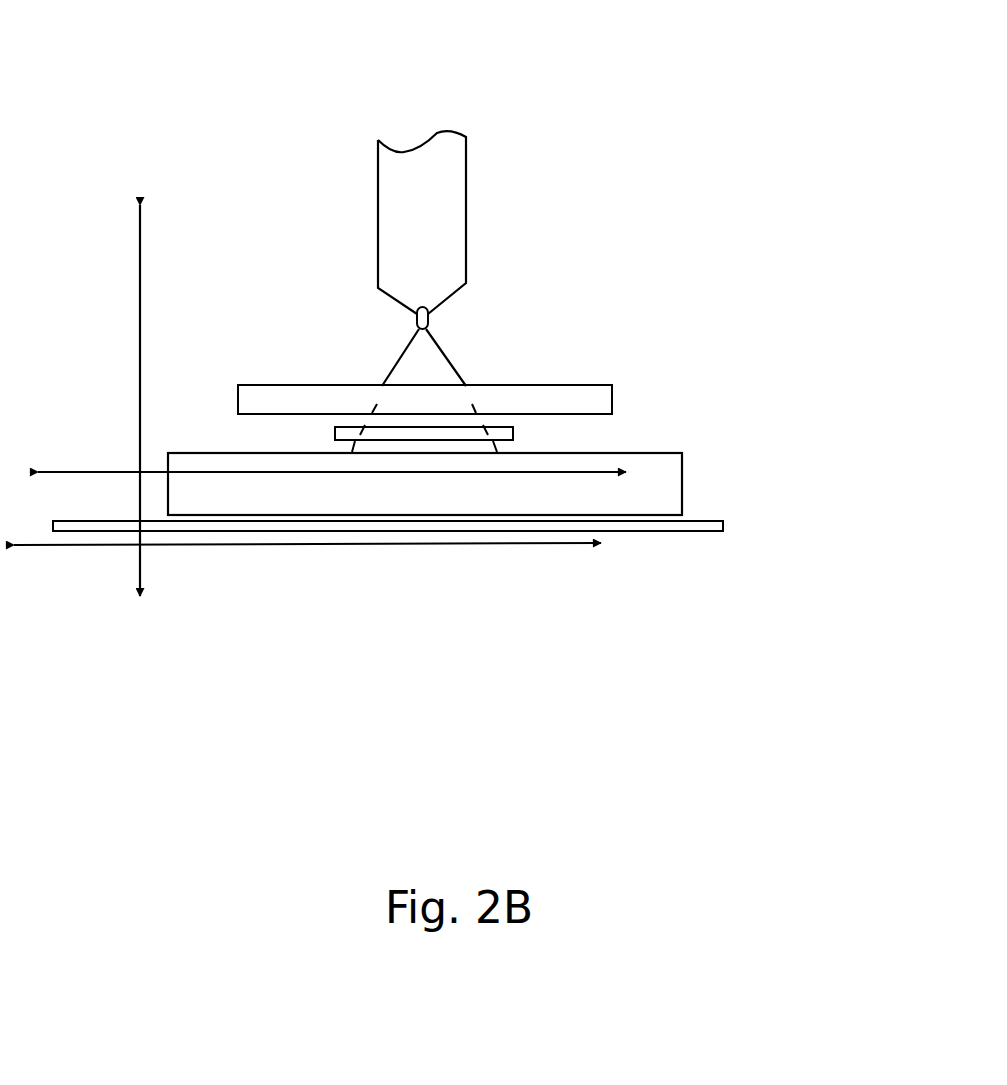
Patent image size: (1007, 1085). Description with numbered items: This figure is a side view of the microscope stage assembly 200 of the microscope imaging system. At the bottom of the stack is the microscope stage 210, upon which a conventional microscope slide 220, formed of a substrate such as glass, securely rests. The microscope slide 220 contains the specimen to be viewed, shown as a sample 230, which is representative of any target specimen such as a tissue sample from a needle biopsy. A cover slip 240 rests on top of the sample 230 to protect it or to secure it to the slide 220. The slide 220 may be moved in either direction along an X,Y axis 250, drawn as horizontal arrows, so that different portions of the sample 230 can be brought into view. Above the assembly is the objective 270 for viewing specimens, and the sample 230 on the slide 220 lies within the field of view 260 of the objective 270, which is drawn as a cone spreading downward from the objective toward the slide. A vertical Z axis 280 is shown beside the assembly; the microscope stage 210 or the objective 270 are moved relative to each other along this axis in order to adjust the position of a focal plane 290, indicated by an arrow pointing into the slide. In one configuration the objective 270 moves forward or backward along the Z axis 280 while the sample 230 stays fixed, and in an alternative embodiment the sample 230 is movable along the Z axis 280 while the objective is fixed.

The microscope stage assembly 200 is at (280, 75).
The microscope stage 210 is at (723, 525).
The microscope slide 220 is at (682, 492).
The sample 230 is at (513, 436).
The cover slip 240 is at (612, 402).
The X,Y axis 250 is at (313, 545).
The field of view 260 is at (453, 367).
The objective 270 is at (466, 220).
The Z axis 280 is at (140, 300).
The focal plane 290 is at (216, 462).